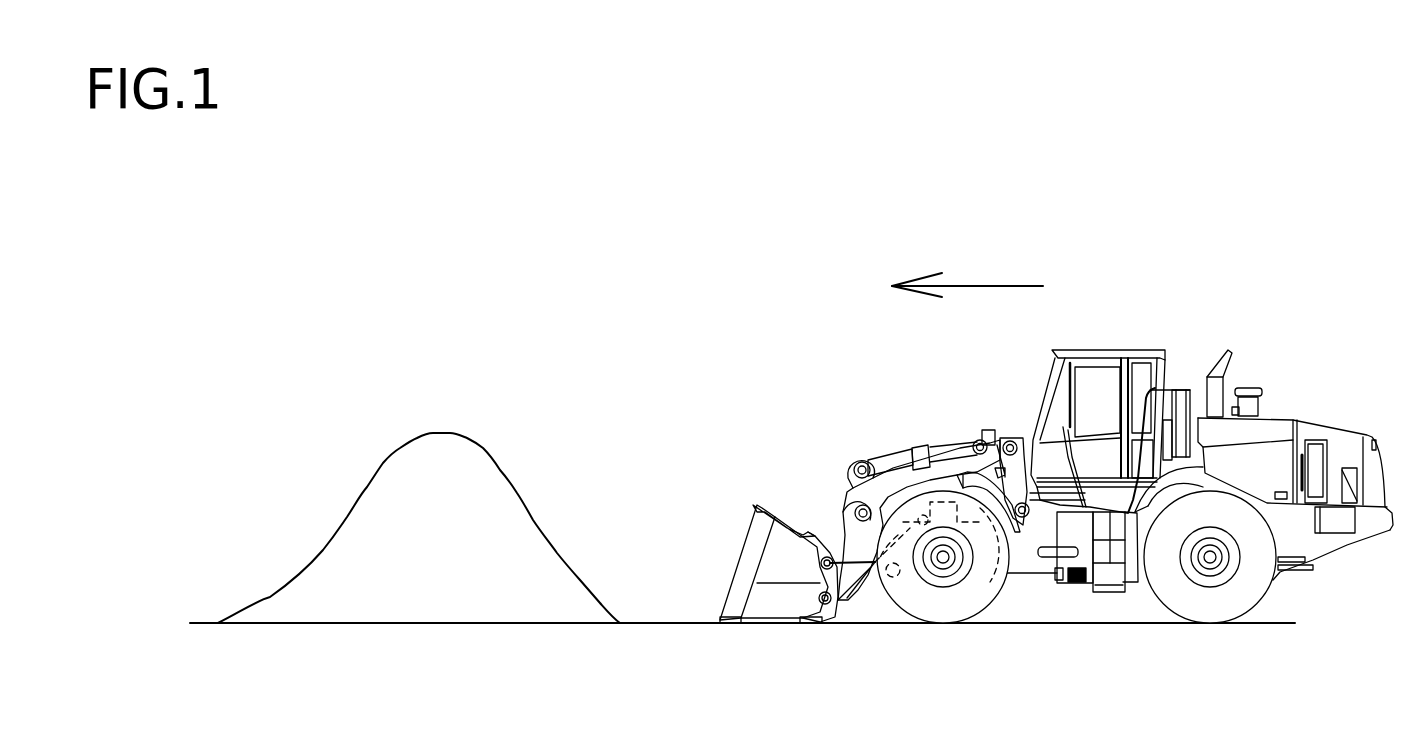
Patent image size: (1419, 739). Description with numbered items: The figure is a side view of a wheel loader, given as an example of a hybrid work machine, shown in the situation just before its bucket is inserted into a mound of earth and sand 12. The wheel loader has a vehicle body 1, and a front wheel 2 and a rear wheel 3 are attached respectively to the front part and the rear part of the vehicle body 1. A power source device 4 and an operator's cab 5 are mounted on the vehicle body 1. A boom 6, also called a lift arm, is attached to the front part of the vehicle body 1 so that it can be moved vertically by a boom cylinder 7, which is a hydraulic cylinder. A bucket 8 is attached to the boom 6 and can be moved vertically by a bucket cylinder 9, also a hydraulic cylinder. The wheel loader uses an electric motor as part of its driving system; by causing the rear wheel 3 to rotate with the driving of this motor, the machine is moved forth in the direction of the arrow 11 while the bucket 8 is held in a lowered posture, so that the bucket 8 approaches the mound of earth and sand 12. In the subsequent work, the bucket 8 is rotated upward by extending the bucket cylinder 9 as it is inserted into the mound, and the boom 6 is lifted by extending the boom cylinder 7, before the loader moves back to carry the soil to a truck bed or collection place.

The vehicle body 1 is at (1310, 550).
The front wheel 2 is at (943, 614).
The rear wheel 3 is at (1207, 612).
The power source device 4 is at (1308, 432).
The operator's cab 5 is at (1153, 353).
The boom 6 is at (900, 487).
The boom cylinder 7 is at (1000, 573).
The bucket 8 is at (778, 512).
The bucket cylinder 9 is at (938, 447).
The arrow 11 is at (977, 283).
The mound of earth and sand 12 is at (472, 455).